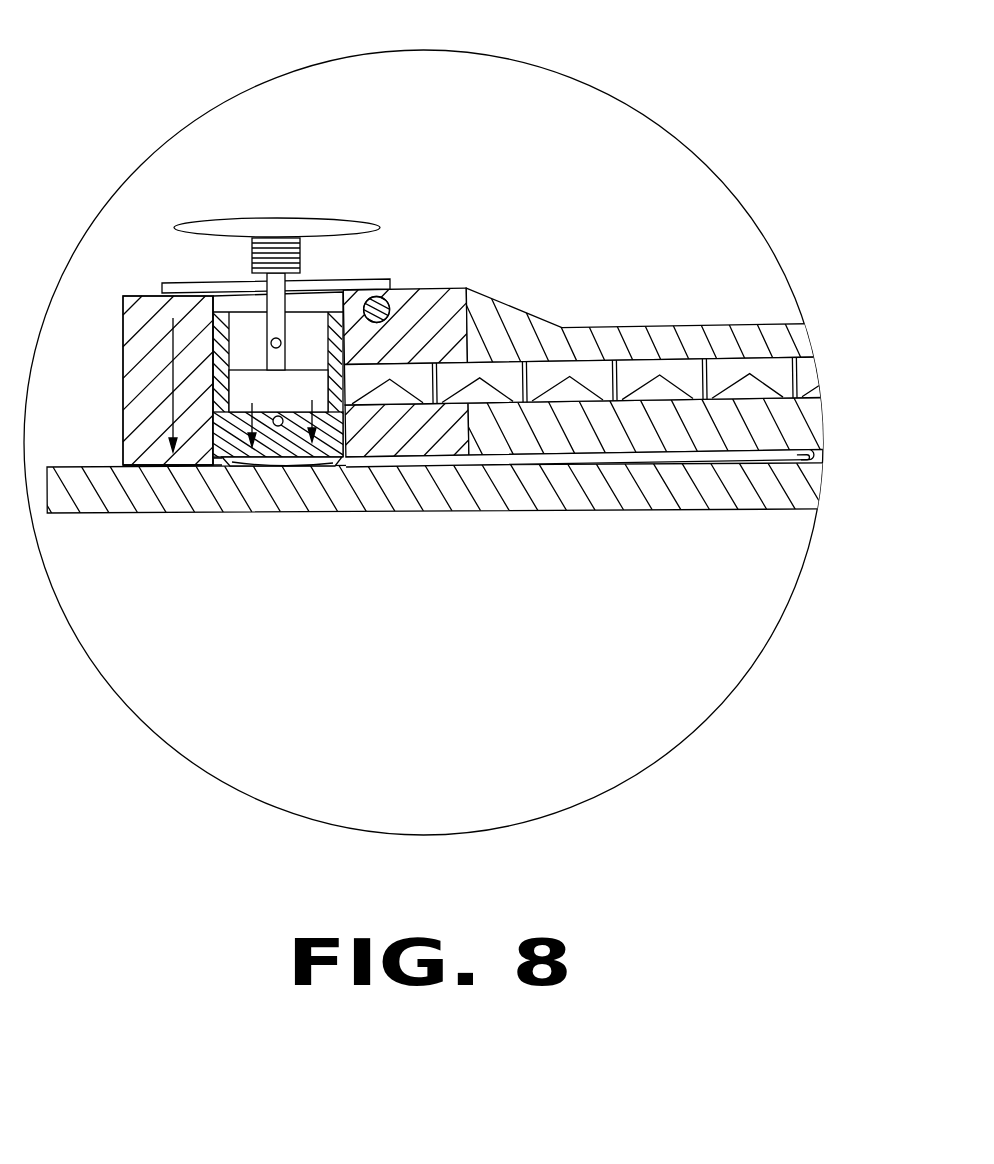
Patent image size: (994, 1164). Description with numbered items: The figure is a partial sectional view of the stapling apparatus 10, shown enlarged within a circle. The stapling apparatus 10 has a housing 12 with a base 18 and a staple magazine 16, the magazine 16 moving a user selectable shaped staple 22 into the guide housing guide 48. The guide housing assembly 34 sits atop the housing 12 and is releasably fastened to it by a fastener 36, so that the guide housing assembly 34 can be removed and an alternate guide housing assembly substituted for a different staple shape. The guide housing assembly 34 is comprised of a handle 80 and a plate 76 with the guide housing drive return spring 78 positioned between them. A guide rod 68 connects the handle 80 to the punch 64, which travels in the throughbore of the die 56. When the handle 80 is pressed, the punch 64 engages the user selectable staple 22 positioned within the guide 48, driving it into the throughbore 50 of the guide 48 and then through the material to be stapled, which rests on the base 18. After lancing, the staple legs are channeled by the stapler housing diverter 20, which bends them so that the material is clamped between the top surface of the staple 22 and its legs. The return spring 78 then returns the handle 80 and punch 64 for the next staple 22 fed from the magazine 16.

The stapling apparatus 10 is at (490, 187).
The housing 12 is at (603, 323).
The staple magazine 16 is at (703, 358).
The base 18 is at (473, 505).
The stapler housing diverter 20 is at (268, 473).
The user selectable shaped staple 22 is at (247, 463).
The guide housing assembly 34 is at (186, 194).
The fastener 36 is at (392, 297).
The guide housing guide 48 is at (243, 397).
The throughbore 50 is at (213, 458).
The die 56 is at (243, 326).
The punch 64 is at (257, 372).
The guide rod 68 is at (280, 307).
The plate 76 is at (187, 292).
The guide housing drive return spring 78 is at (253, 272).
The handle 80 is at (278, 218).